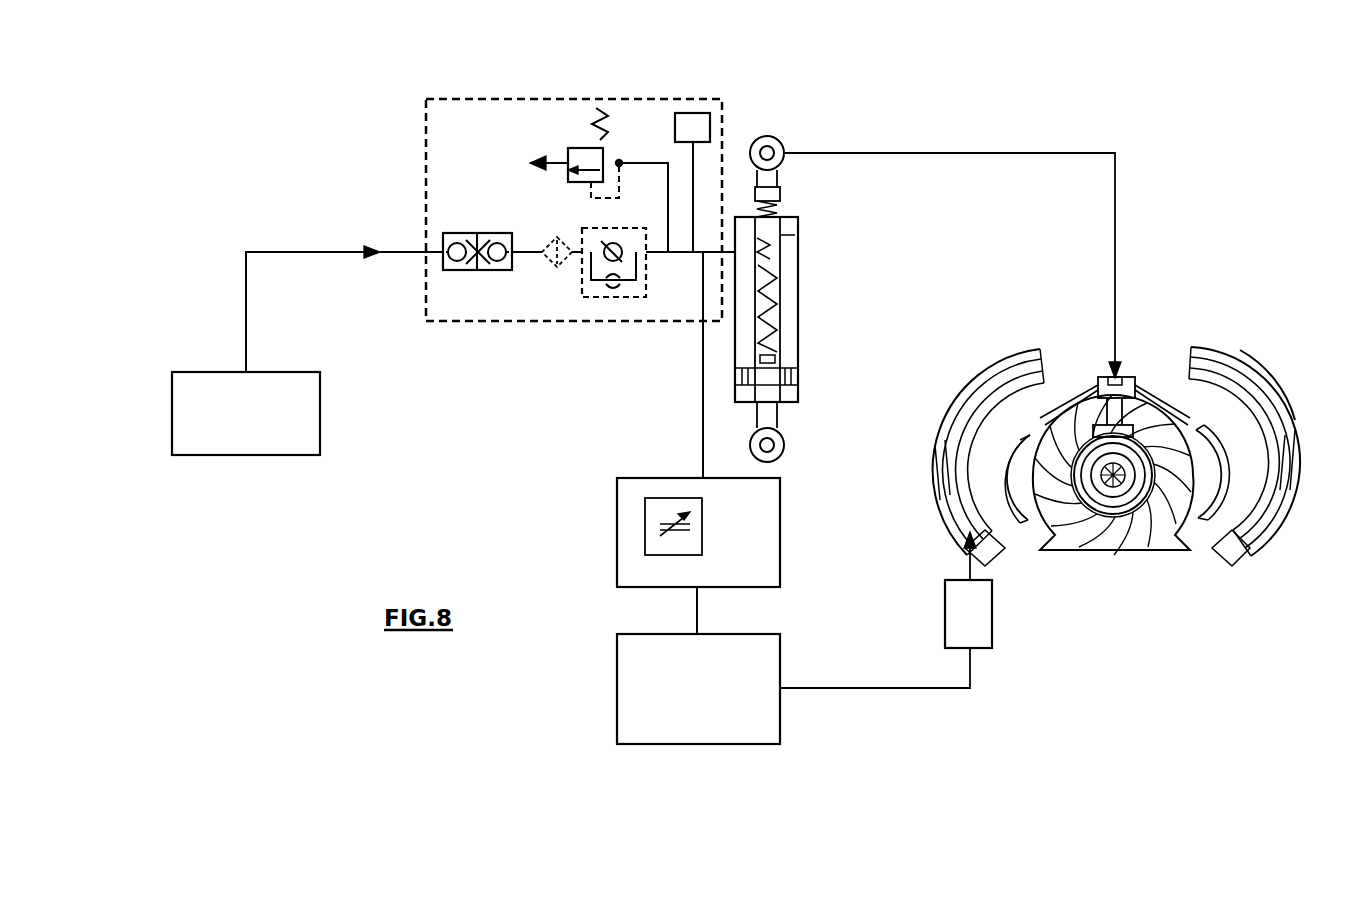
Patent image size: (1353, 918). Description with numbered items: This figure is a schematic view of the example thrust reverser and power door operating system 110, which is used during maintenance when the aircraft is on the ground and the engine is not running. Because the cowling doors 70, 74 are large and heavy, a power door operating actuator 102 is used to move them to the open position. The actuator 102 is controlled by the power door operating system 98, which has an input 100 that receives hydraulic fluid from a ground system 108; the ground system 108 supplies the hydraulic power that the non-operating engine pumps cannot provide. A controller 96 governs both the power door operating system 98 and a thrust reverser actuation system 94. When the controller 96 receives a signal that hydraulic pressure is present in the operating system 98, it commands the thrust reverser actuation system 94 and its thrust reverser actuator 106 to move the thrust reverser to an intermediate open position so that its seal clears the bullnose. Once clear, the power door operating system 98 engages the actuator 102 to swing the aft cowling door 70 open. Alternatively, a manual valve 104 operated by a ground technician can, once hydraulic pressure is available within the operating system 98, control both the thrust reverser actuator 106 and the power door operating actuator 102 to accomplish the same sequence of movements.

The aft cowling door 70 is at (1256, 538).
The cowling door 74 is at (1268, 378).
The thrust reverser actuation system 94 is at (764, 654).
The controller 96 is at (764, 534).
The power door operating system 98 is at (496, 322).
The input 100 is at (462, 270).
The power door operating actuator 102 is at (789, 298).
The manual valve 104 is at (710, 126).
The thrust reverser actuator 106 is at (992, 620).
The ground system 108 is at (307, 350).
The thrust reverser and power door operating system 110 is at (1010, 79).